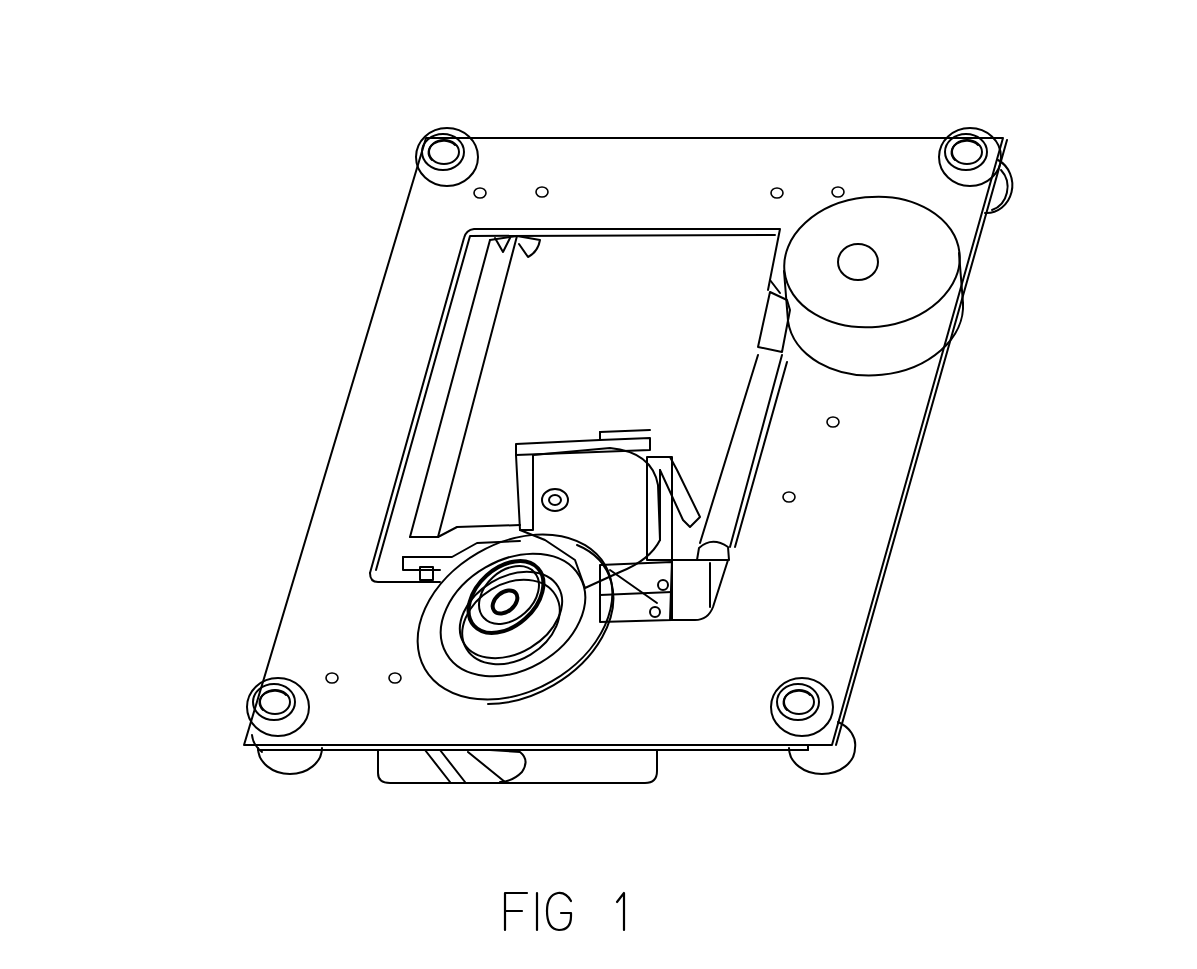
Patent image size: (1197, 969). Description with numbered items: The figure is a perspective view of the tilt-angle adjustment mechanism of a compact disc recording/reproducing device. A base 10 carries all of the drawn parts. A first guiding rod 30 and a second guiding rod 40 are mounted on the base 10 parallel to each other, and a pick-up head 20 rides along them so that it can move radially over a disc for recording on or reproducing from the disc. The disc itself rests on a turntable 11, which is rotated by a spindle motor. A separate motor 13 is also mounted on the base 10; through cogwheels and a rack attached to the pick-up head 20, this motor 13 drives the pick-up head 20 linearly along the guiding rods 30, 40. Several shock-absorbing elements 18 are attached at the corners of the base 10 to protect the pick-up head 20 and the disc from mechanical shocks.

The base 10 is at (878, 487).
The turntable 11 is at (537, 680).
The motor 13 is at (937, 293).
The shock-absorbing elements 18 is at (425, 160).
The pick-up head 20 is at (598, 487).
The first guiding rod 30 is at (750, 433).
The second guiding rod 40 is at (488, 325).